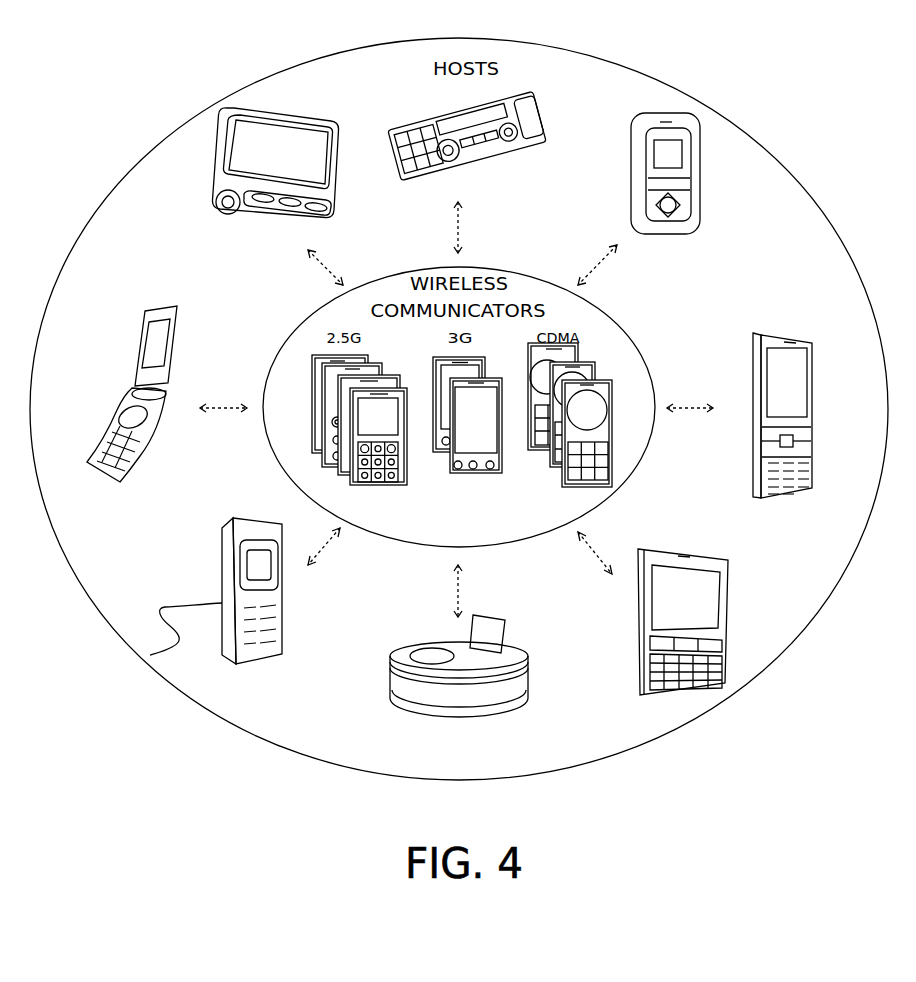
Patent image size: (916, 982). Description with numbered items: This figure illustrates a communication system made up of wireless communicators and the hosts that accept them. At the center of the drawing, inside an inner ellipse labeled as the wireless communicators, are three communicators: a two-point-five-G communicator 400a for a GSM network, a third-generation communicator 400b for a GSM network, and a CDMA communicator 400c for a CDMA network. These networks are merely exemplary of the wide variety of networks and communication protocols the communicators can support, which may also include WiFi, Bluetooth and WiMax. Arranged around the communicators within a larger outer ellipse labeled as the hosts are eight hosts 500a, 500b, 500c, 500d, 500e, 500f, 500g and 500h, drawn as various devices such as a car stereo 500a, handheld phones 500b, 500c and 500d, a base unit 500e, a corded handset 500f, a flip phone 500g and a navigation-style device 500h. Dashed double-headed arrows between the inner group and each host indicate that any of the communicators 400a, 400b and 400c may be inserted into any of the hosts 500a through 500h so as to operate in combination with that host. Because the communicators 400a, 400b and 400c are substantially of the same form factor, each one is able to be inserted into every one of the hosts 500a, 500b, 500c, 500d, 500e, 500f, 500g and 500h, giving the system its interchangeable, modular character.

The 2.5G communicator 400a is at (393, 490).
The 3G communicator 400b is at (465, 478).
The CDMA communicator 400c is at (546, 470).
The host 500a is at (523, 145).
The host 500b is at (700, 208).
The host 500c is at (815, 398).
The host 500d is at (730, 583).
The host 500e is at (507, 632).
The host 500f is at (287, 598).
The host 500g is at (177, 348).
The host 500h is at (338, 208).